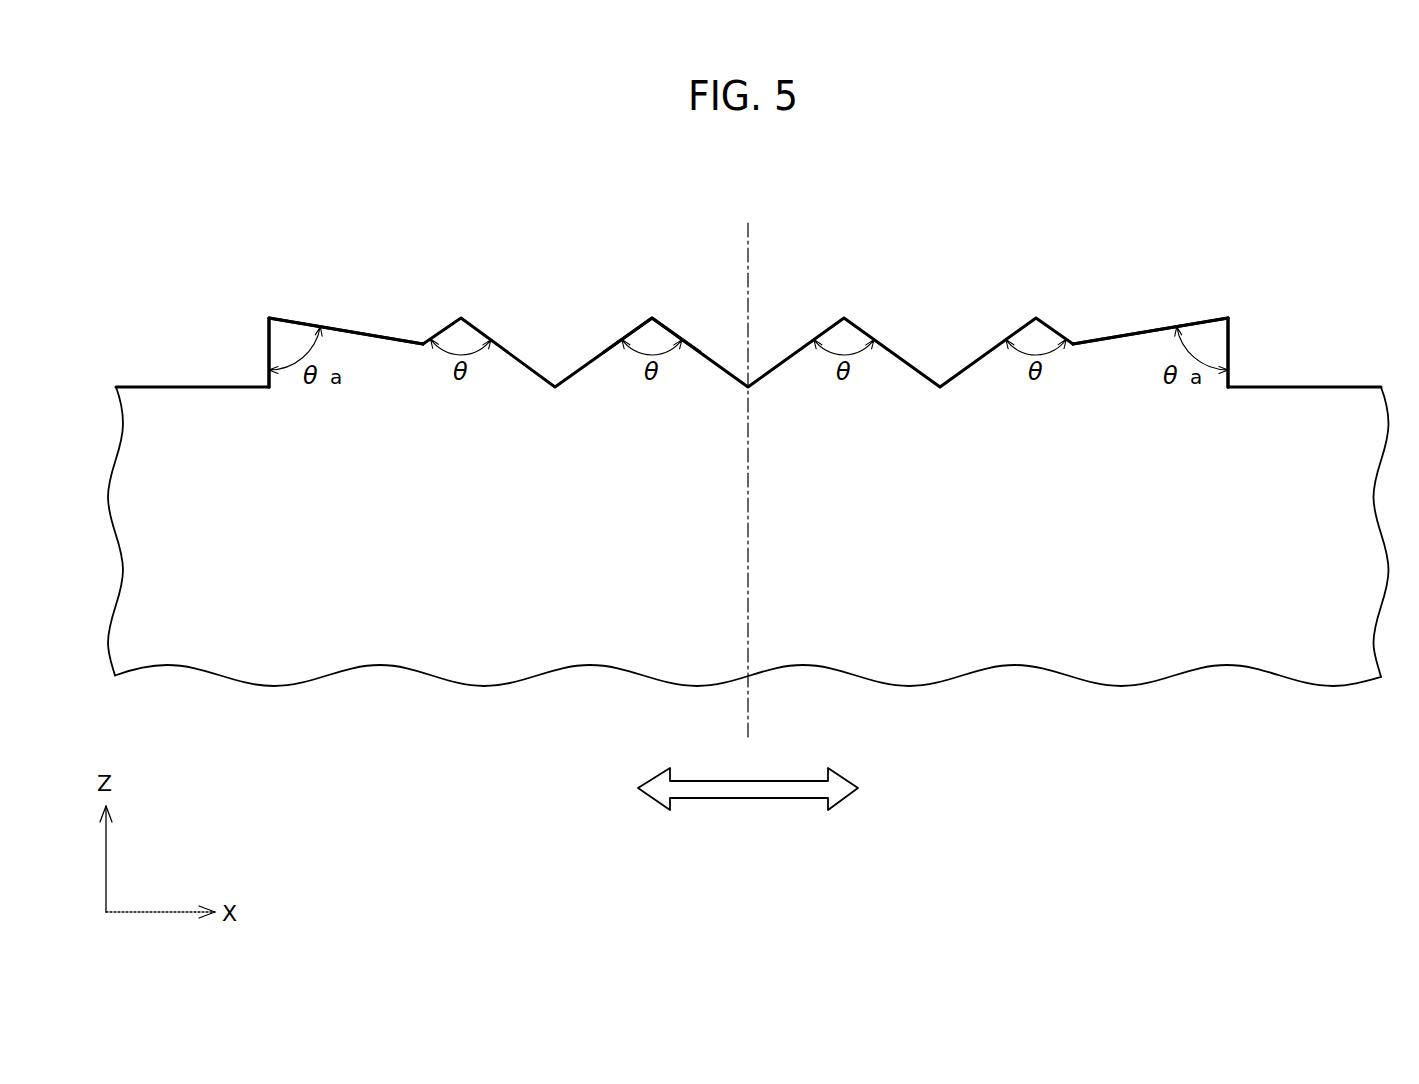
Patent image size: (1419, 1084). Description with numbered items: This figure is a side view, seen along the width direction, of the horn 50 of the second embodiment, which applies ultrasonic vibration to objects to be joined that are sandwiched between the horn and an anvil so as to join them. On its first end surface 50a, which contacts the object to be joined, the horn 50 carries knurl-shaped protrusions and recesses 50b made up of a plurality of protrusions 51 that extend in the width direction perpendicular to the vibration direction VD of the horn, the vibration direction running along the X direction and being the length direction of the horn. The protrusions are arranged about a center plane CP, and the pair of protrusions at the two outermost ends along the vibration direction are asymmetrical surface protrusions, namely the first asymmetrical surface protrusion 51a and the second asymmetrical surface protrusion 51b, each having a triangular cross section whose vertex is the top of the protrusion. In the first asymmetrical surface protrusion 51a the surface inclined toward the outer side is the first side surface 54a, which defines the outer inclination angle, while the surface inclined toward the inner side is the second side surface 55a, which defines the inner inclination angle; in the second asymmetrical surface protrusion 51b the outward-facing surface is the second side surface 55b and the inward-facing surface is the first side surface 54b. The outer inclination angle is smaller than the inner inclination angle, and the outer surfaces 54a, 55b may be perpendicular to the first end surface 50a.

The horn 50 is at (1172, 630).
The first end surface 50a is at (1325, 382).
The protrusions and recesses 50b is at (640, 303).
The protrusions 51 is at (510, 370).
The first asymmetrical surface protrusion 51a is at (293, 340).
The second asymmetrical surface protrusion 51b is at (1200, 337).
The first side surface 54a is at (268, 350).
The first side surface 54b is at (1135, 333).
The second side surface 55a is at (377, 335).
The second side surface 55b is at (1230, 353).
The center plane CP is at (747, 258).
The vibration direction VD is at (748, 800).